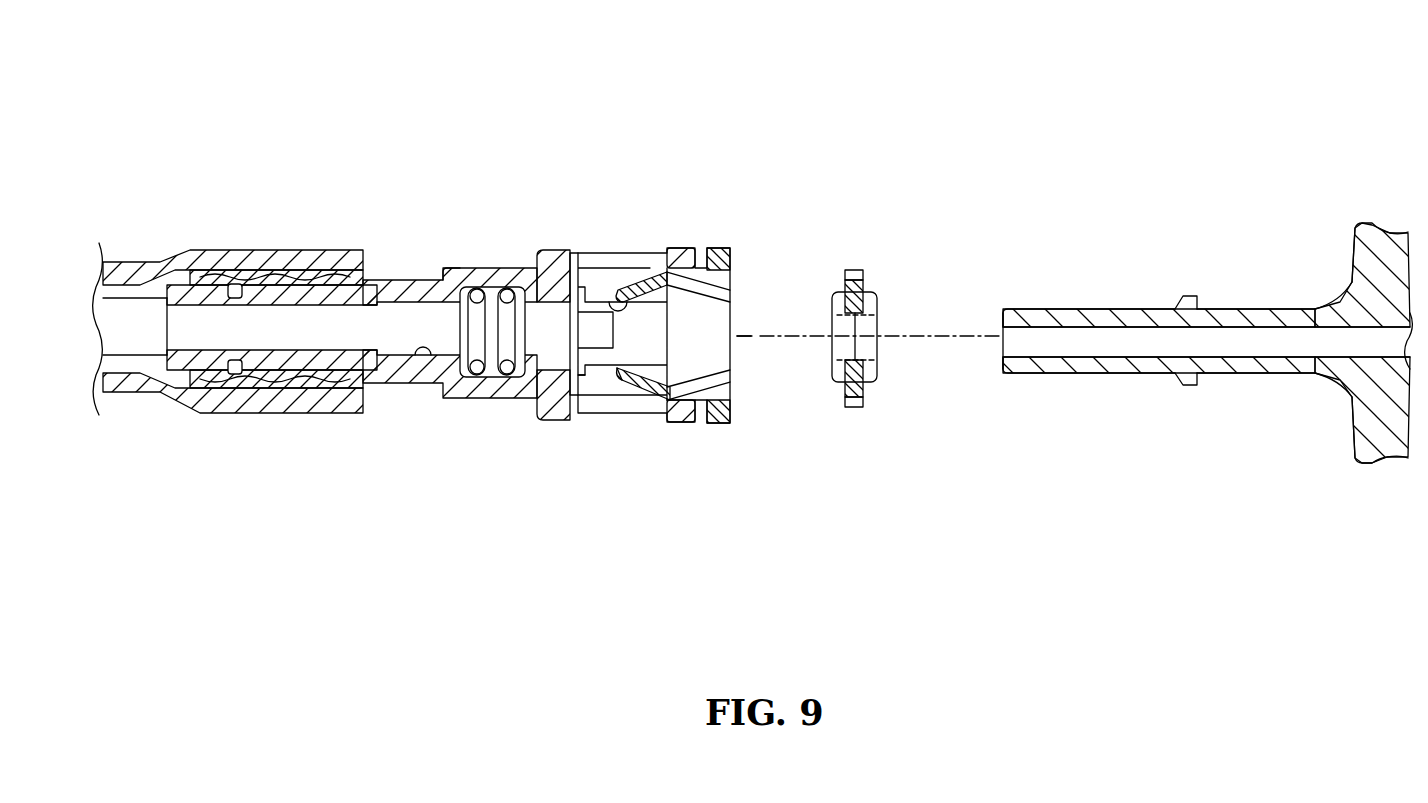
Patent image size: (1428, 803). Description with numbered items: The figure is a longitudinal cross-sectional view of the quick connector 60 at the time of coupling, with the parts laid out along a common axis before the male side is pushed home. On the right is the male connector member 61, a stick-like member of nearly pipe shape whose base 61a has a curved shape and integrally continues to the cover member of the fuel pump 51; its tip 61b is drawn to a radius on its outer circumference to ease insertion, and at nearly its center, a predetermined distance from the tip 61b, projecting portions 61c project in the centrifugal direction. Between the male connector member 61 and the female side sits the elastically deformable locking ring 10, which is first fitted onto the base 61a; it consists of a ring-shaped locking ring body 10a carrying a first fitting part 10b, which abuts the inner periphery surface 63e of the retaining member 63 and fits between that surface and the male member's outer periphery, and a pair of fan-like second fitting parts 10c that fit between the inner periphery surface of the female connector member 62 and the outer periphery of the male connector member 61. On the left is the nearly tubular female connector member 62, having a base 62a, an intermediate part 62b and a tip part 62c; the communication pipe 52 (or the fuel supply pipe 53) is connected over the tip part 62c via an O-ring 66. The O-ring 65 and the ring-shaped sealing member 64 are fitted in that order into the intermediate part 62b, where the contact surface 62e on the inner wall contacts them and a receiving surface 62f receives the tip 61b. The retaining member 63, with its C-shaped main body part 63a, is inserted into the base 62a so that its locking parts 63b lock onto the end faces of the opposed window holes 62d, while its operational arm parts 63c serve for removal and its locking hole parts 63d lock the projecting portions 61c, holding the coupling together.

The quick connector 60 is at (779, 112).
The locking ring 10 is at (887, 279).
The locking ring body 10a is at (856, 270).
The first fitting part 10b is at (865, 281).
The second fitting parts 10c is at (843, 297).
The male connector member 61 is at (1206, 346).
The base 61a is at (1342, 390).
The tip 61b is at (1076, 309).
The projecting portions 61c is at (1183, 385).
The fuel pump 51 is at (1383, 462).
The communication pipe 52 is at (295, 250).
The fuel supply pipe 53 is at (228, 329).
The female connector member 62 is at (546, 349).
The base 62a is at (671, 417).
The intermediate part 62b is at (527, 280).
The tip part 62c is at (290, 388).
The window holes 62d is at (625, 275).
The contact surface 62e is at (492, 345).
The receiving surface 62f is at (422, 362).
The retaining member 63 is at (641, 360).
The main body part 63a is at (630, 392).
The locking parts 63b is at (653, 406).
The operational arm parts 63c is at (713, 424).
The locking hole parts 63d is at (583, 395).
The inner periphery surface 63e is at (612, 300).
The sealing member 64 is at (549, 262).
The O-ring 65 is at (507, 290).
The O-ring 66 is at (234, 376).